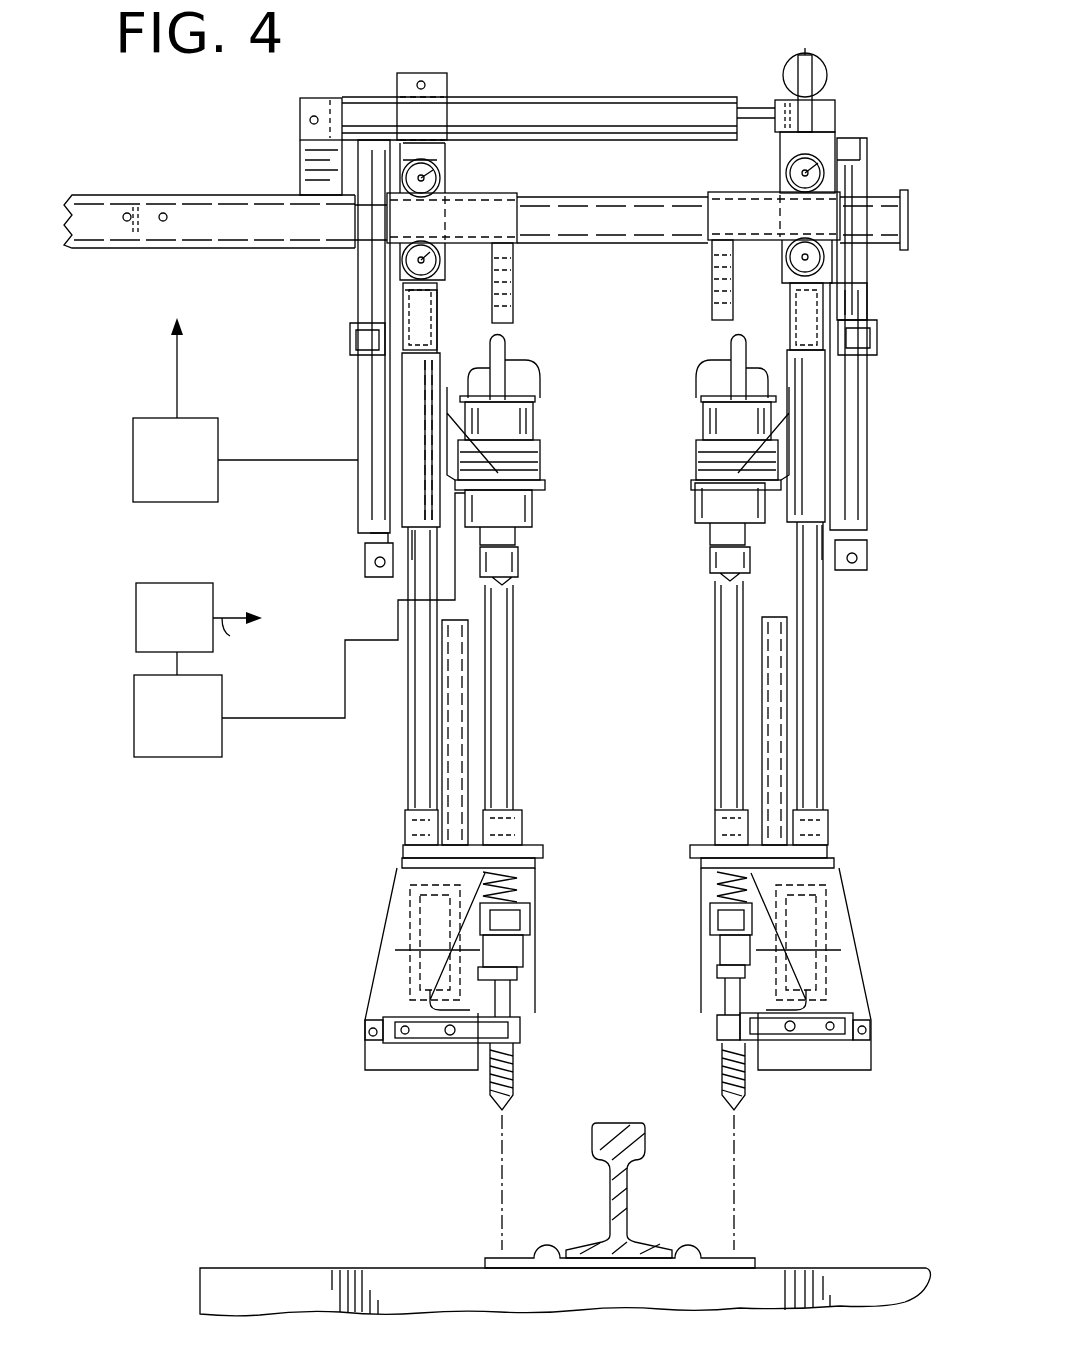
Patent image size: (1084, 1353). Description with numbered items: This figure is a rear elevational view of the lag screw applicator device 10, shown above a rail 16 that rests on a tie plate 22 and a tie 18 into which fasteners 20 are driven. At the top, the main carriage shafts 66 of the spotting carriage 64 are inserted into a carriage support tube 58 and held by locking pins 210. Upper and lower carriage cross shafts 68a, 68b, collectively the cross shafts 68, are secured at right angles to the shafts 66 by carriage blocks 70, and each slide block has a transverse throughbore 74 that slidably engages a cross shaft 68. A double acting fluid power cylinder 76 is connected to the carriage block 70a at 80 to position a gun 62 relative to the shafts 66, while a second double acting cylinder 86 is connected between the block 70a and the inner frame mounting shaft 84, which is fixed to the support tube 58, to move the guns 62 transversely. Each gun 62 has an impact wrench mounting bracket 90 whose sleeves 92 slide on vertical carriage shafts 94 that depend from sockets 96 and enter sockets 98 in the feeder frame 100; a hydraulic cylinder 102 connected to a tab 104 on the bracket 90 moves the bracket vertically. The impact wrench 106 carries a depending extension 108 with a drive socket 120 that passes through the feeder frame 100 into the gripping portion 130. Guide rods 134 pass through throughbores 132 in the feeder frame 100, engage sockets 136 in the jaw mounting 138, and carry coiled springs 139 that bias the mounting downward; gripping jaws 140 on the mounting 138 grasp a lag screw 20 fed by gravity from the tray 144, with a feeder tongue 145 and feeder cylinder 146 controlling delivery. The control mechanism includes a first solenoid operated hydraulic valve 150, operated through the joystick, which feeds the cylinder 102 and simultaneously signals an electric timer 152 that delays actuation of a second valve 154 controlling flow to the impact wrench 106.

The fastener applicator device 10 is at (650, 72).
The rails 16 is at (622, 1130).
The ties 18 is at (280, 1282).
The fasteners 20 is at (512, 1075).
The tie plates 22 is at (748, 1258).
The carriage support tubes 58 is at (108, 222).
The gun 62 is at (548, 356).
The spotting carriage 64 is at (510, 98).
The main carriage shafts 66 is at (652, 215).
The carriage cross shafts 68 is at (800, 172).
The upper cross shaft 68a is at (446, 178).
The lower cross shaft 68b is at (421, 242).
The carriage blocks 70 is at (482, 222).
The carriage block 70a is at (833, 108).
The transverse throughbore 74 is at (433, 170).
The double acting fluid power cylinder 76 is at (828, 78).
The connection point 80 is at (805, 52).
The inner frame mounting shaft 84 is at (303, 178).
The second double acting fluid power cylinder 86 is at (588, 110).
The impact wrench mounting bracket 90 is at (420, 470).
The vertically extending sleeves 92 is at (380, 545).
The vertical carriage shafts 94 is at (422, 655).
The sockets 96 is at (440, 312).
The sockets 98 is at (405, 820).
The feeder frame 100 is at (535, 855).
The double-acting hydraulic cylinder 102 is at (372, 395).
The tab 104 is at (435, 555).
The impact wrench 106 is at (525, 443).
The extension 108 is at (500, 598).
The drive socket 120 is at (520, 970).
The gripping portion 130 is at (368, 940).
The throughbores 132 is at (505, 825).
The guide rods 134 is at (500, 728).
The socket 136 is at (510, 910).
The jaw mounting 138 is at (533, 925).
The coiled spring 139 is at (515, 880).
The gripping jaws 140 is at (505, 1005).
The lag screw tray 144 is at (455, 660).
The feeder tongue 145 is at (380, 990).
The feeder cylinder 146 is at (410, 1035).
The first solenoid operated hydraulic valve 150 is at (133, 472).
The electric timer 152 is at (225, 642).
The second solenoid operated hydraulic valve 154 is at (299, 625).
The locking pins 210 is at (165, 213).